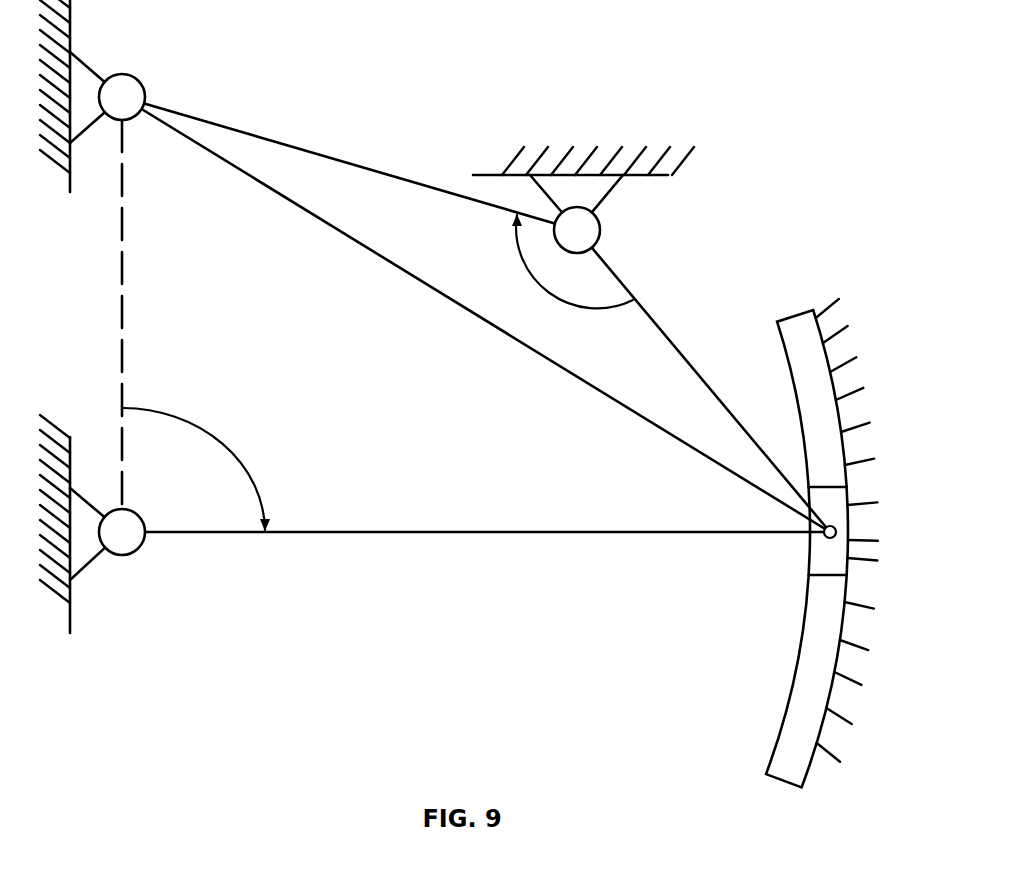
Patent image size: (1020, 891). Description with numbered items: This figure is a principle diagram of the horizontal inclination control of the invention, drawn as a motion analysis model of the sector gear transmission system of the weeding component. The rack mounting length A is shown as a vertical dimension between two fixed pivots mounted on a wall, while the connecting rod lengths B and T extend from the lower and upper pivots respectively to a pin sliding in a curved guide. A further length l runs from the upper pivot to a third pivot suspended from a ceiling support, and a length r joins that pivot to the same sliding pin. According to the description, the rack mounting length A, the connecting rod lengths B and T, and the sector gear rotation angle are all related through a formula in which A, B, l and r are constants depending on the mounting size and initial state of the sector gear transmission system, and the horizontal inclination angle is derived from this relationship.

The rack mounting length A is at (89, 314).
The connecting rod length B is at (476, 575).
The connecting rod length T is at (476, 314).
The constant length l is at (349, 146).
The constant length r is at (703, 381).